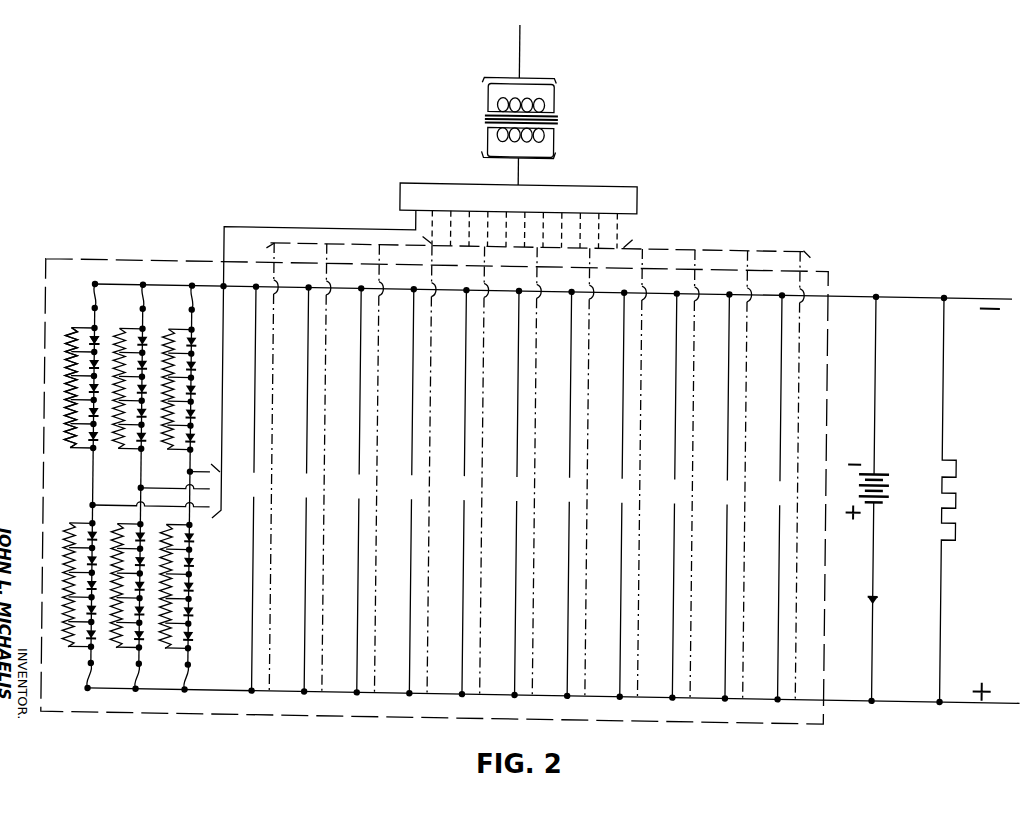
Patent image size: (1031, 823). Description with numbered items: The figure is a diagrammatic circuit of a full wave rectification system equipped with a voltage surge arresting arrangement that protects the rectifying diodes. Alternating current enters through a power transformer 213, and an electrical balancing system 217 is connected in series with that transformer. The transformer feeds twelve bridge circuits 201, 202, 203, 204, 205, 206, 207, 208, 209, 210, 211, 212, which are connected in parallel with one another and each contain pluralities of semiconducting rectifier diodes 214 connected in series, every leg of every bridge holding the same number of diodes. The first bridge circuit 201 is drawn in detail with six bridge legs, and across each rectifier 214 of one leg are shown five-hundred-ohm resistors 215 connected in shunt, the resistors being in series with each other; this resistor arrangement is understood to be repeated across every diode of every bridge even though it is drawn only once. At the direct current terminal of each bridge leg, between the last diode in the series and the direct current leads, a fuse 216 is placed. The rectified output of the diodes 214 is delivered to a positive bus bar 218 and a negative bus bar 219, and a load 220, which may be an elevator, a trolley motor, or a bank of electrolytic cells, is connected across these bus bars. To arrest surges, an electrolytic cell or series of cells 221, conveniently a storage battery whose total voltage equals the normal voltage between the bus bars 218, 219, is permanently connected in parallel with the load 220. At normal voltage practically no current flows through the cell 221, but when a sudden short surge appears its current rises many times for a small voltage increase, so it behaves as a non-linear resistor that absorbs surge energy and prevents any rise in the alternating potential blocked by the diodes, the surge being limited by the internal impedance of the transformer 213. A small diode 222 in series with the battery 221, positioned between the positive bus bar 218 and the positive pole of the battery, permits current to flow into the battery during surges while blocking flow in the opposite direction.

The bridge circuit 201 is at (89, 502).
The bridge circuit 202 is at (262, 469).
The bridge circuit 203 is at (314, 469).
The bridge circuit 204 is at (367, 470).
The bridge circuit 205 is at (419, 471).
The bridge circuit 206 is at (472, 472).
The bridge circuit 207 is at (525, 473).
The bridge circuit 208 is at (577, 474).
The bridge circuit 209 is at (630, 475).
The bridge circuit 210 is at (682, 475).
The bridge circuit 211 is at (735, 476).
The bridge circuit 212 is at (788, 477).
The power transformer 213 is at (556, 112).
The semiconducting rectifier diode 214 is at (95, 336).
The resistor 215 is at (66, 332).
The fuse 216 is at (95, 285).
The electrical balancing system 217 is at (636, 184).
The positive bus bar 218 is at (897, 691).
The negative bus bar 219 is at (926, 283).
The load 220 is at (958, 456).
The electrolytic cell 221 is at (880, 460).
The diode 222 is at (880, 587).